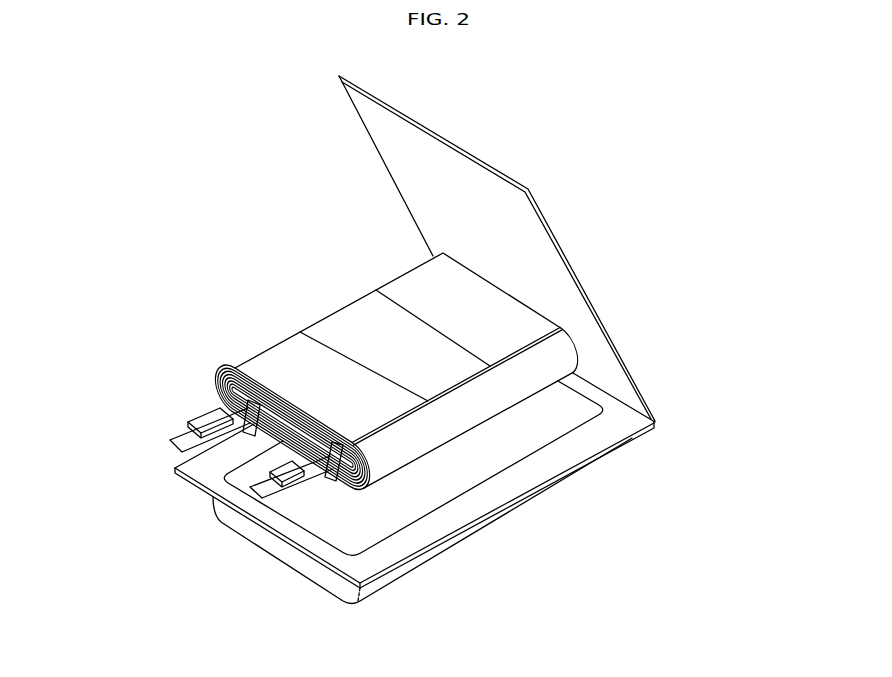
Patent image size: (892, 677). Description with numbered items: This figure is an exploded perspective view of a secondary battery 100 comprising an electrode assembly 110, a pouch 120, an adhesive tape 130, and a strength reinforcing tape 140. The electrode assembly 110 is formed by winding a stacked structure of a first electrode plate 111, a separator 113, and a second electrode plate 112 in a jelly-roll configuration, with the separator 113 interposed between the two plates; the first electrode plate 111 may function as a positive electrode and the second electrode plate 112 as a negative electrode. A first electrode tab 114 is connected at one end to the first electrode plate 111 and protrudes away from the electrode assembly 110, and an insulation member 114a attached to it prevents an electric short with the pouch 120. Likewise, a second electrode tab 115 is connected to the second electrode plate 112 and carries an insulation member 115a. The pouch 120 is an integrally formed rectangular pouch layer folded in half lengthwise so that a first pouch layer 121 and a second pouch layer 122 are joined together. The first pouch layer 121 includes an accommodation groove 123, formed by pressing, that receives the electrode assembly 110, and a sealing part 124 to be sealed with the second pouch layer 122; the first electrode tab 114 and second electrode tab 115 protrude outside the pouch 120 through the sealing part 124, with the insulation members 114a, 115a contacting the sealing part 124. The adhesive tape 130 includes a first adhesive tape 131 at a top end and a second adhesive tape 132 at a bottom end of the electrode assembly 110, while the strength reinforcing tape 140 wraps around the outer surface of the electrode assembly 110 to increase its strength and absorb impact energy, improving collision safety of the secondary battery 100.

The secondary battery 100 is at (156, 76).
The electrode assembly 110 is at (389, 420).
The first electrode plate 111 is at (292, 427).
The second electrode plate 112 is at (292, 427).
The separator 113 is at (292, 427).
The first electrode tab 114 is at (193, 453).
The insulation member 114a is at (205, 417).
The second electrode tab 115 is at (355, 531).
The insulation member 115a is at (291, 478).
The pouch 120 is at (714, 382).
The first pouch layer 121 is at (443, 492).
The second pouch layer 122 is at (640, 391).
The accommodation groove 123 is at (430, 500).
The sealing part 124 is at (505, 490).
The adhesive tape 130 is at (397, 310).
The first adhesive tape 131 is at (289, 352).
The second adhesive tape 132 is at (390, 291).
The strength reinforcing tape 140 is at (457, 377).